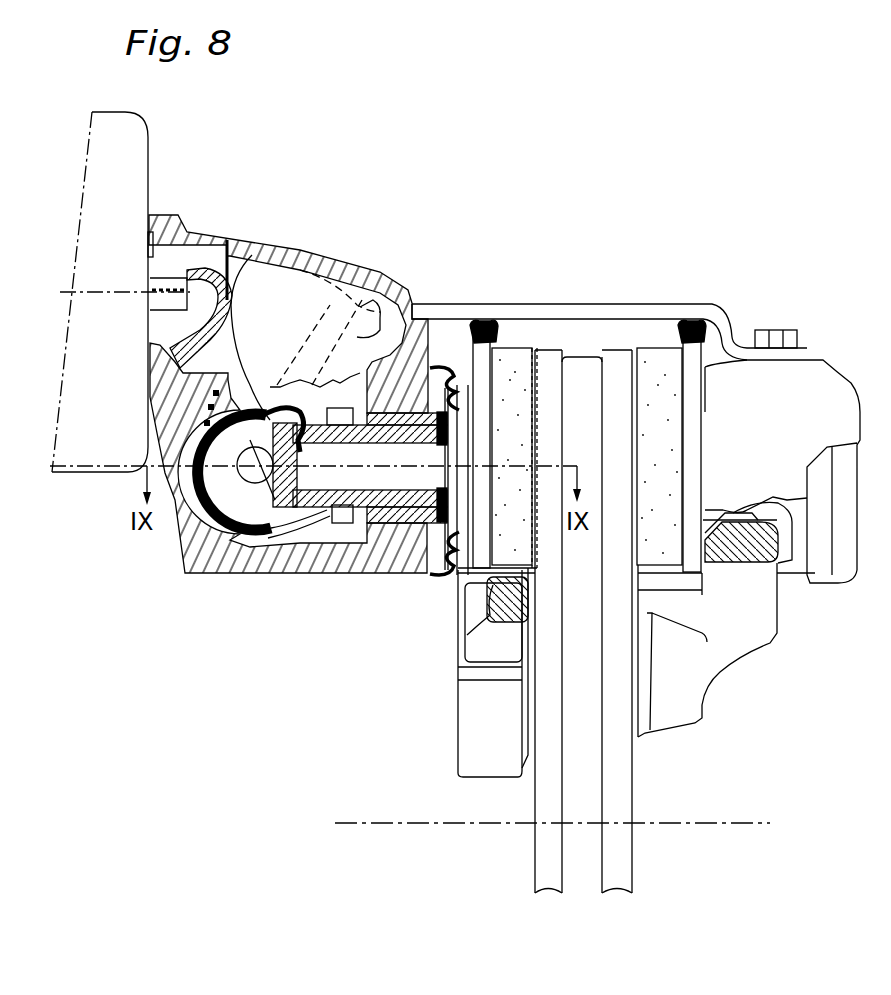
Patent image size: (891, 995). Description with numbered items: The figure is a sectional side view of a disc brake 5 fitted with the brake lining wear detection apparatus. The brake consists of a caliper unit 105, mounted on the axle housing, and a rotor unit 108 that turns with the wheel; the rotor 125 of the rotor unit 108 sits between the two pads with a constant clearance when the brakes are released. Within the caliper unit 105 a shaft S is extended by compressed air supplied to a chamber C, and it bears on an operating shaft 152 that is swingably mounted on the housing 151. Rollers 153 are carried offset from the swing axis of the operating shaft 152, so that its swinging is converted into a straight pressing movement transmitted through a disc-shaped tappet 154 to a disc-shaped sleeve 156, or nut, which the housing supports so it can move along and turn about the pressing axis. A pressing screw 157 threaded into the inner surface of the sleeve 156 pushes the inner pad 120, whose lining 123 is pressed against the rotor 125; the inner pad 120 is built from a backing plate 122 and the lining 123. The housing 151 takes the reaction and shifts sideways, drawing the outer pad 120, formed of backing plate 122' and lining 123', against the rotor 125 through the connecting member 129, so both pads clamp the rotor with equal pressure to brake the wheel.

The disc brake 5 is at (780, 178).
The caliper unit 105 is at (455, 162).
The rotor unit 108 is at (695, 786).
The inner pad 120 is at (569, 240).
The yoke plate 122 is at (498, 405).
The pad 123 is at (531, 404).
The pad 123' is at (652, 404).
The yoke plate 122' is at (696, 407).
The rotor 125 is at (582, 363).
The connecting member 129 is at (717, 312).
The housing 151 is at (365, 313).
The operating shaft 152 is at (257, 400).
The roller 153 is at (258, 486).
The tappet 154 is at (277, 513).
The sleeve 156 is at (333, 507).
The pressing screw 157 is at (377, 500).
The shaft S is at (160, 287).
The chamber C is at (73, 470).